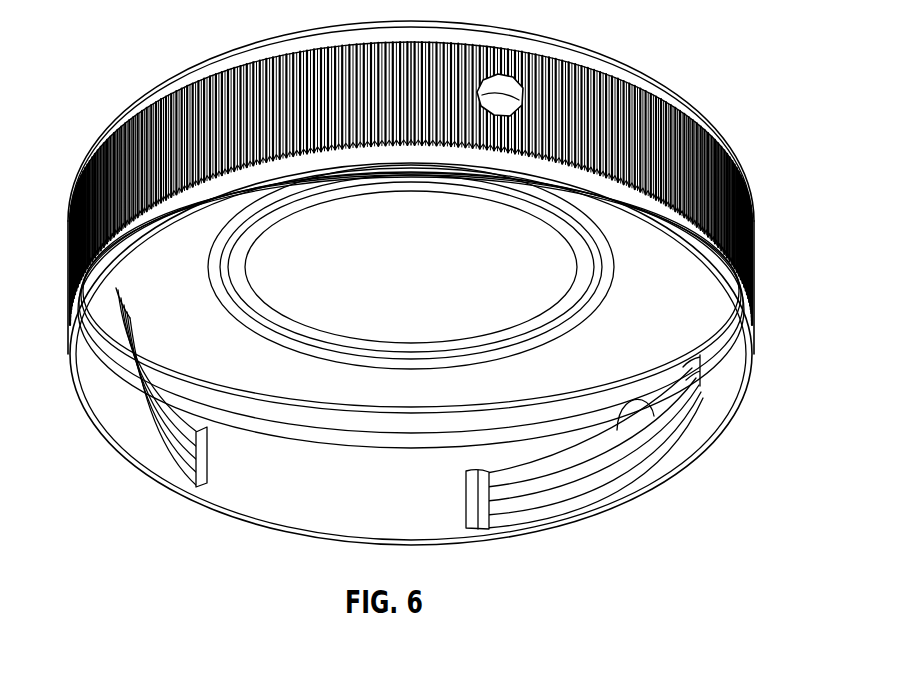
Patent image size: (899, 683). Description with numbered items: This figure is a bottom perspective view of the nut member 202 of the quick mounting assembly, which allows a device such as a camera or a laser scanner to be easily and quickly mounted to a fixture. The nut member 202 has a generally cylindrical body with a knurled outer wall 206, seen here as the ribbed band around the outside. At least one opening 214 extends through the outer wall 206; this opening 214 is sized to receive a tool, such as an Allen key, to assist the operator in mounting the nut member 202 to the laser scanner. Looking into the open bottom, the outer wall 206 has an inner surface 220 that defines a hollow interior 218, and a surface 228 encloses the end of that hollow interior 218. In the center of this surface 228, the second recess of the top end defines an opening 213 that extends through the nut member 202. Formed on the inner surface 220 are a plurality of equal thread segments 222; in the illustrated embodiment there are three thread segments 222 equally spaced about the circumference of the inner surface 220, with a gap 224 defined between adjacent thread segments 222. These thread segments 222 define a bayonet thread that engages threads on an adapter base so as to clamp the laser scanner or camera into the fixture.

The nut member 202 is at (661, 30).
The knurled outer wall 206 is at (752, 246).
The opening 213 is at (419, 262).
The opening 214 is at (499, 102).
The hollow interior 218 is at (646, 298).
The inner surface 220 is at (432, 526).
The thread segments 222 is at (128, 393).
The gap 224 is at (282, 484).
The surface 228 is at (271, 364).